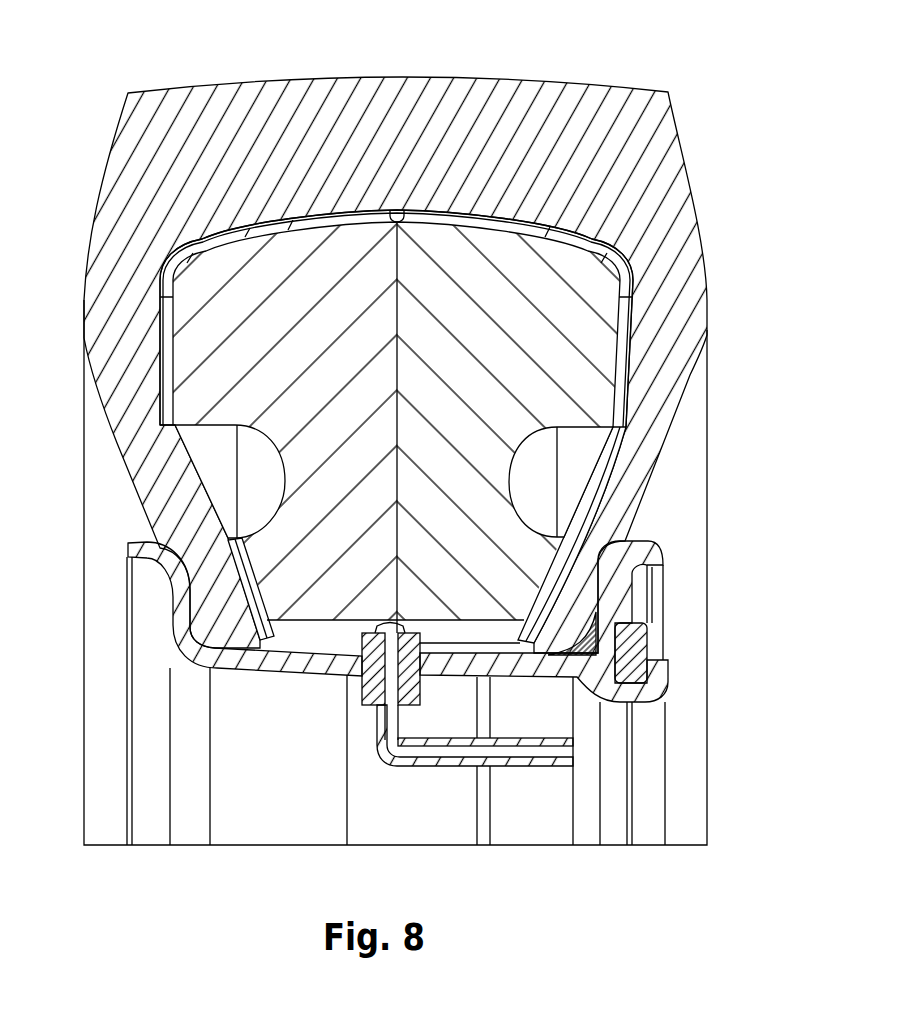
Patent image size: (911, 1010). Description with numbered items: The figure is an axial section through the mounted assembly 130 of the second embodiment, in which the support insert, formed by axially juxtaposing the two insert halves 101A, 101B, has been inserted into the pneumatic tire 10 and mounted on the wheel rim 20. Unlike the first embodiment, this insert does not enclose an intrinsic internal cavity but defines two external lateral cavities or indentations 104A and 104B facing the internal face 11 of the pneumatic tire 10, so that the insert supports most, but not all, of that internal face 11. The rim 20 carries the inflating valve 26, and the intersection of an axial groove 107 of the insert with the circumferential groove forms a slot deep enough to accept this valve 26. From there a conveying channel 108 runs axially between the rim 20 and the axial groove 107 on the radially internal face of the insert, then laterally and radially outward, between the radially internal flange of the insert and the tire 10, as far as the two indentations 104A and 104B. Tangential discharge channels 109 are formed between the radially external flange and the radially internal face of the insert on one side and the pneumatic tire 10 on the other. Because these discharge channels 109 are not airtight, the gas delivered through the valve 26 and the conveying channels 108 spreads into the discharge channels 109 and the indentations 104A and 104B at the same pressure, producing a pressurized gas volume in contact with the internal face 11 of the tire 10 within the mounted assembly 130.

The pneumatic tire 10 is at (547, 80).
The discharge channel 109 is at (290, 226).
The insert half 101A is at (310, 366).
The insert half 101B is at (486, 356).
The lateral cavity (indentation) 104A is at (268, 494).
The lateral cavity (indentation) 104B is at (536, 491).
The internal face 11 is at (189, 480).
The conveying channel 108 is at (539, 564).
The wheel rim 20 is at (310, 678).
The axial groove 107 is at (461, 648).
The inflating valve 26 is at (370, 705).
The mounted assembly 130 is at (287, 743).